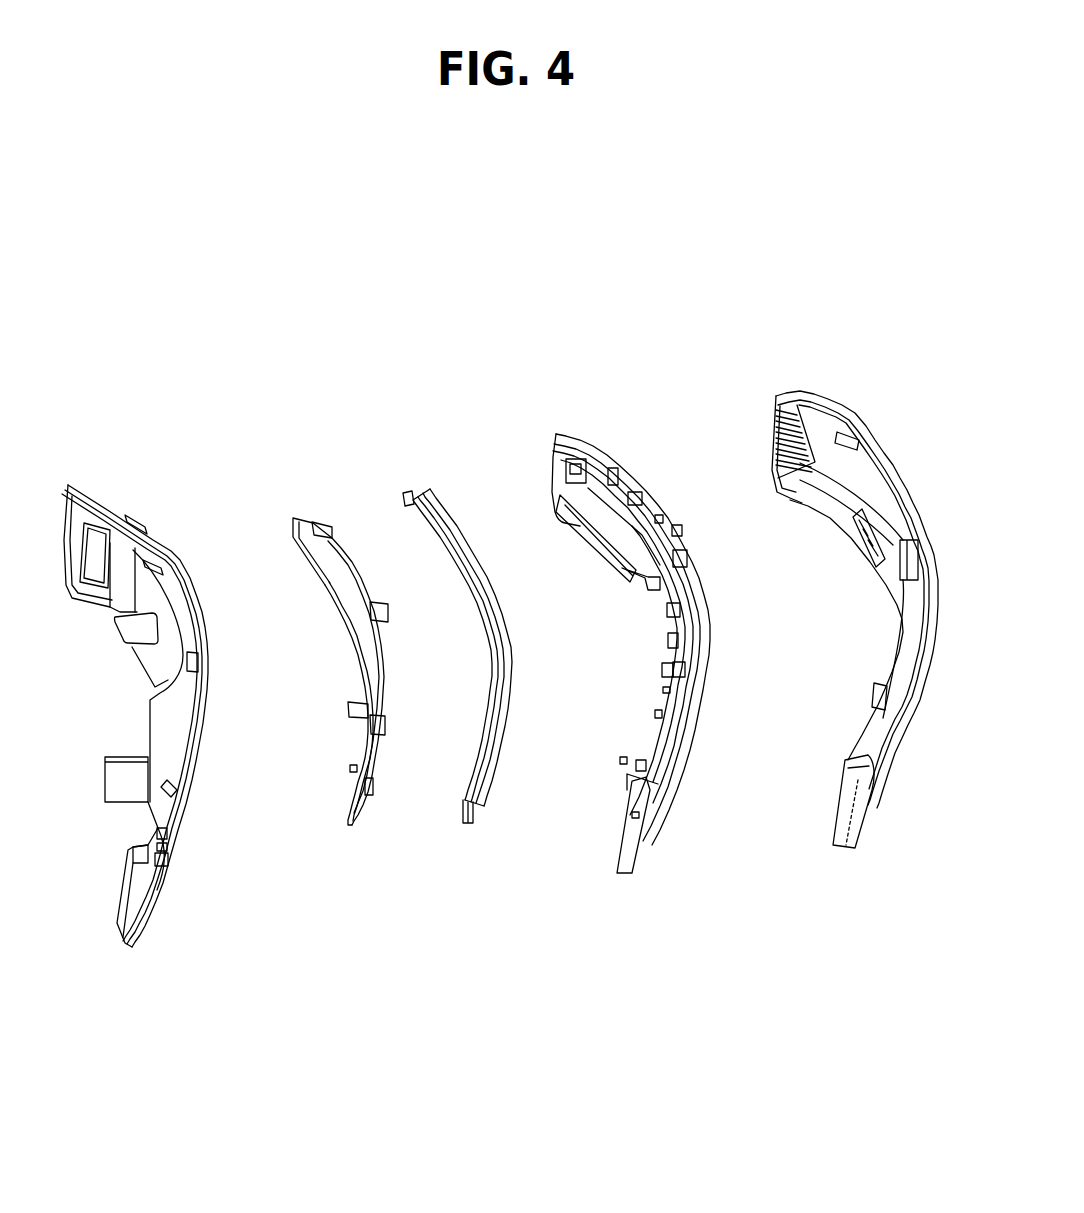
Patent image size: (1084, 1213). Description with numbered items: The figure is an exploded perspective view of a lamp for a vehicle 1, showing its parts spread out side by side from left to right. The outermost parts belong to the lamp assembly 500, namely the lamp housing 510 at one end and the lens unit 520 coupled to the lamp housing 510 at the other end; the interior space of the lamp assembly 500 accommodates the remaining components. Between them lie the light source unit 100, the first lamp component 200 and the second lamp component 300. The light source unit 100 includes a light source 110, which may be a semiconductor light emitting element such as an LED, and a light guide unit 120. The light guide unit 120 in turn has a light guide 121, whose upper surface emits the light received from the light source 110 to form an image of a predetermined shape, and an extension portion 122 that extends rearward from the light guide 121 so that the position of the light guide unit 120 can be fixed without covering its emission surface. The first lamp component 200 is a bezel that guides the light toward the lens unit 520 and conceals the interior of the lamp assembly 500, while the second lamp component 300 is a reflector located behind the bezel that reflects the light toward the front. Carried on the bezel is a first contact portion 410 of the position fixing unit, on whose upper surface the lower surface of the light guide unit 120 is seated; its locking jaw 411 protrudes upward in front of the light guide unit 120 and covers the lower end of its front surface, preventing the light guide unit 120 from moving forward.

The lamp for a vehicle 1 is at (857, 233).
The light source unit 100 is at (545, 876).
The light source 110 is at (463, 823).
The light guide unit 120 is at (498, 764).
The light guide 121 is at (437, 520).
The extension portion 122 is at (438, 532).
The first lamp component 200 is at (589, 440).
The second lamp component 300 is at (335, 588).
The first contact portion 410 is at (628, 548).
The locking jaw 411 is at (645, 547).
The lamp assembly 500 is at (775, 1000).
The lamp housing 510 is at (160, 888).
The lens unit 520 is at (848, 820).